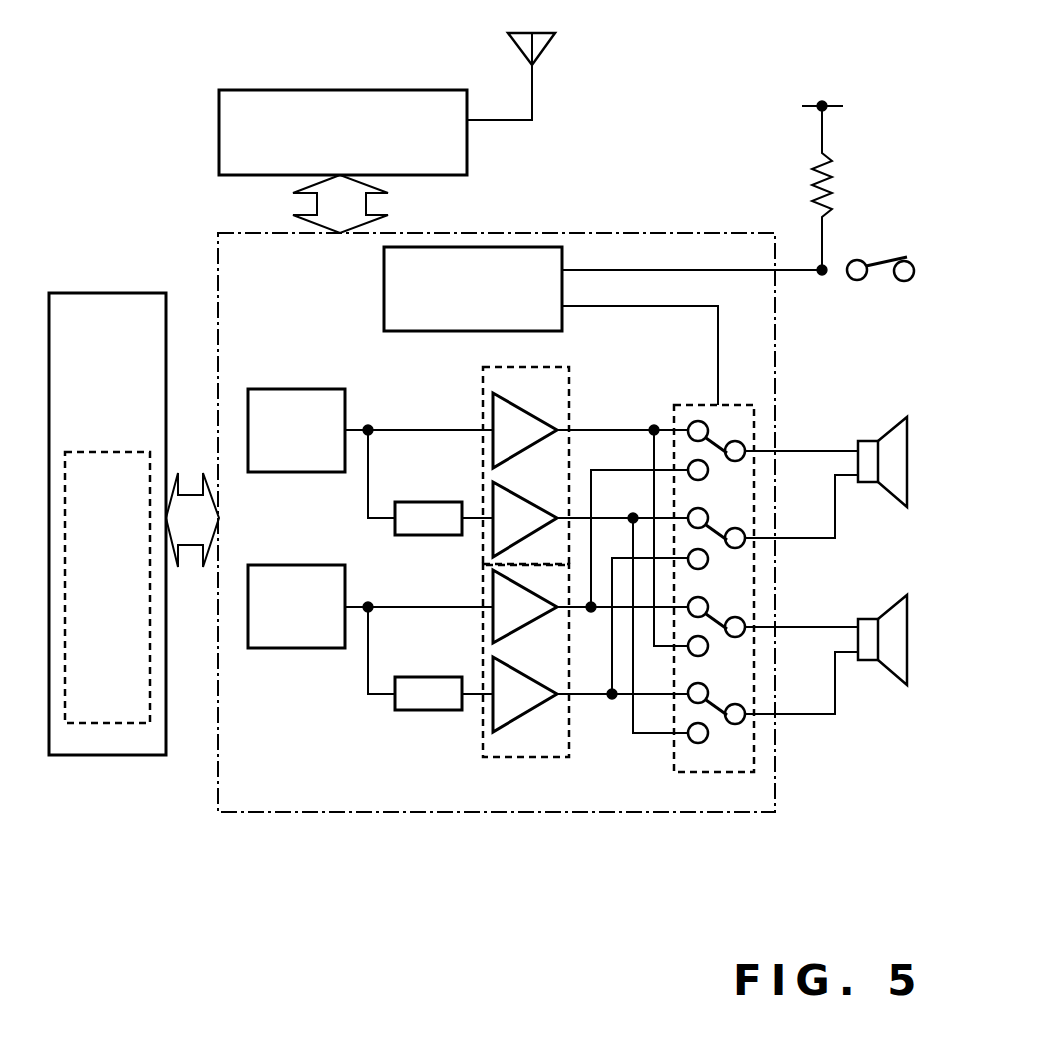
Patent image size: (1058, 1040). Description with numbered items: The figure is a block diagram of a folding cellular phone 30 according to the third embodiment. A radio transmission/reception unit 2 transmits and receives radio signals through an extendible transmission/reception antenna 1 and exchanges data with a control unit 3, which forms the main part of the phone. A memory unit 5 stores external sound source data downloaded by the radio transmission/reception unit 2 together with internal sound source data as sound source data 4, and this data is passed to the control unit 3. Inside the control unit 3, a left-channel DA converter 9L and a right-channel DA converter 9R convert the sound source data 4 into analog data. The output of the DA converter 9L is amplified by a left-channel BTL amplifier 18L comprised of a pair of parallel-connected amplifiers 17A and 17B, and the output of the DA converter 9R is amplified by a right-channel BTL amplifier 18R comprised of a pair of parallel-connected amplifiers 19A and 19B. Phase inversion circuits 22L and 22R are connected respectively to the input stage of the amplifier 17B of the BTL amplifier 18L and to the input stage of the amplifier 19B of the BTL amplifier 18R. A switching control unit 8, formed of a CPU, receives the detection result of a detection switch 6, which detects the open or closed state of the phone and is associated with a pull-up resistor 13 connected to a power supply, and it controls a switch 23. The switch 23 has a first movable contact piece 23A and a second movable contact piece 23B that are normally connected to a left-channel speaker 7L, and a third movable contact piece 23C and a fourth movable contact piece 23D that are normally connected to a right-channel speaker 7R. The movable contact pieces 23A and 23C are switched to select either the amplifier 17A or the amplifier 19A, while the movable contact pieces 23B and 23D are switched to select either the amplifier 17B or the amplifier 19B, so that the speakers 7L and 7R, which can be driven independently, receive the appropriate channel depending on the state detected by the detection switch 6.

The transmission/reception antenna 1 is at (550, 42).
The radio transmission/reception unit 2 is at (306, 90).
The control unit 3 is at (254, 813).
The sound source data 4 is at (100, 452).
The memory unit 5 is at (82, 293).
The detection switch 6 is at (886, 261).
The left-channel speaker 7L is at (871, 441).
The right-channel speaker 7R is at (871, 619).
The switching control unit 8 is at (384, 276).
The left-channel DA converter 9L is at (272, 389).
The right-channel DA converter 9R is at (272, 565).
The pull-up resistor 13 is at (836, 170).
The amplifier 17A is at (530, 445).
The amplifier 17B is at (530, 533).
The left-channel BTL amplifier 18L is at (483, 385).
The right-channel BTL amplifier 18R is at (508, 757).
The amplifier 19A is at (528, 624).
The amplifier 19B is at (528, 711).
The phase inversion circuit 22L is at (420, 535).
The phase inversion circuit 22R is at (420, 710).
The switch 23 is at (676, 768).
The first movable contact piece 23A is at (714, 447).
The second movable contact piece 23B is at (714, 534).
The third movable contact piece 23C is at (714, 623).
The fourth movable contact piece 23D is at (714, 709).
The folding cellular phone 30 is at (733, 105).